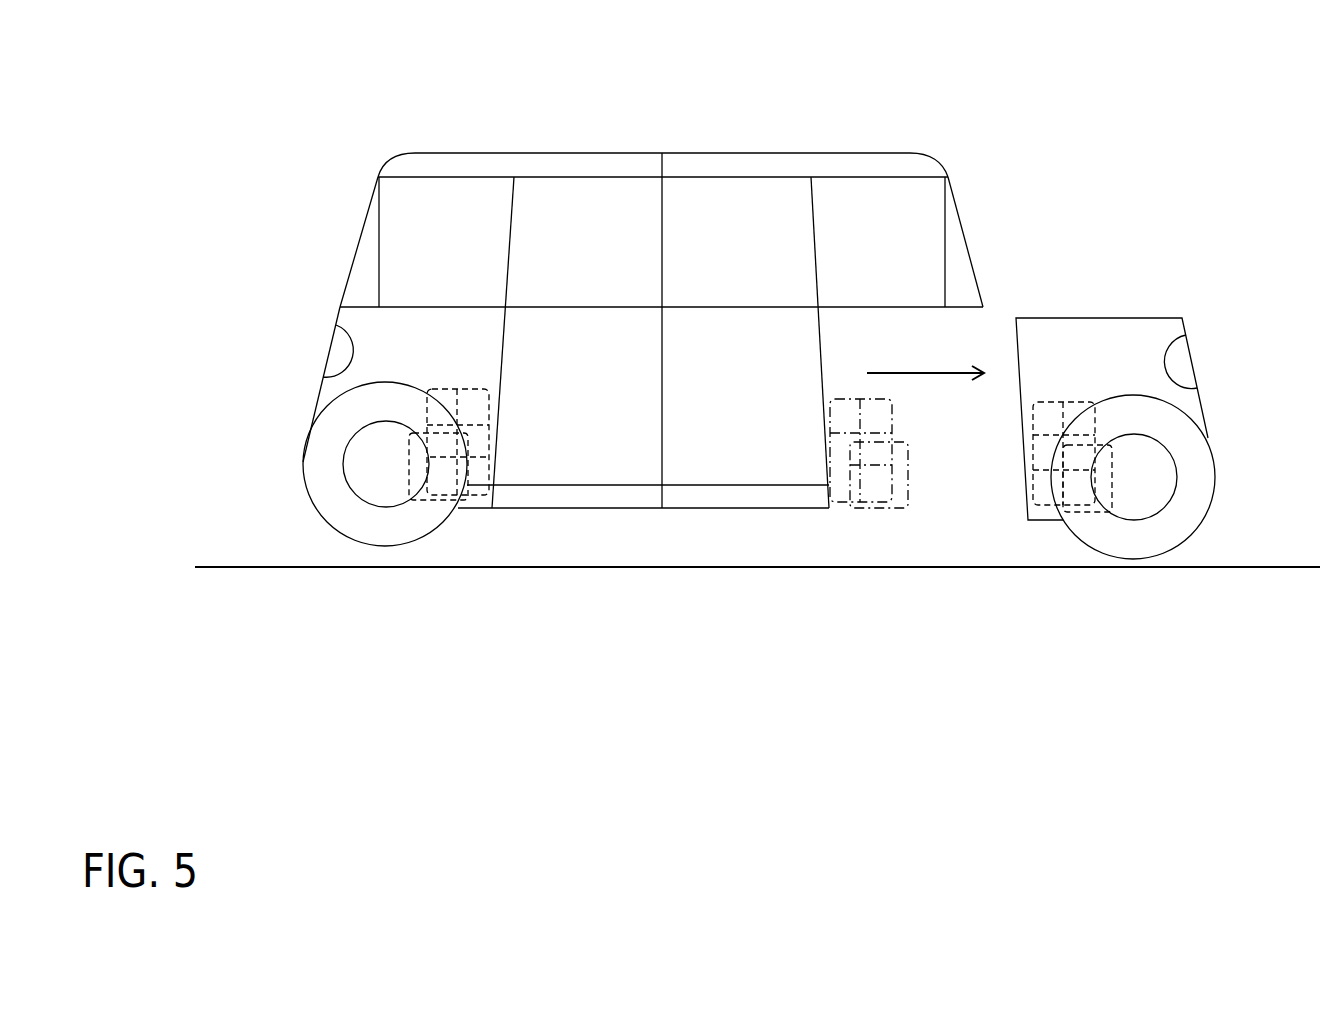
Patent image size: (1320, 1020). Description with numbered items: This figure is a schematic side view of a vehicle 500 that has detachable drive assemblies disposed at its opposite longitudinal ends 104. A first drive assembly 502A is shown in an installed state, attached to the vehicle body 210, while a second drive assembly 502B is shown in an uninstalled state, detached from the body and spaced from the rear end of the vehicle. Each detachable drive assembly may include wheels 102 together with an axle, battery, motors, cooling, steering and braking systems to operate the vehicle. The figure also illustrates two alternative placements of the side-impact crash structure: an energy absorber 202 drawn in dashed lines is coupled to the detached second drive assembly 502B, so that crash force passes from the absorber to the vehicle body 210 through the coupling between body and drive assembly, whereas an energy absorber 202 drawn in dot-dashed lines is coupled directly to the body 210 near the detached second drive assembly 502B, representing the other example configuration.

The vehicle 500 is at (280, 195).
The vehicle body 210 is at (490, 152).
The ends of the vehicle 104 is at (338, 304).
The first drive assembly 502A is at (418, 307).
The second drive assembly 502B is at (1117, 317).
The wheels 102 is at (320, 517).
The energy absorber 202 is at (447, 493).